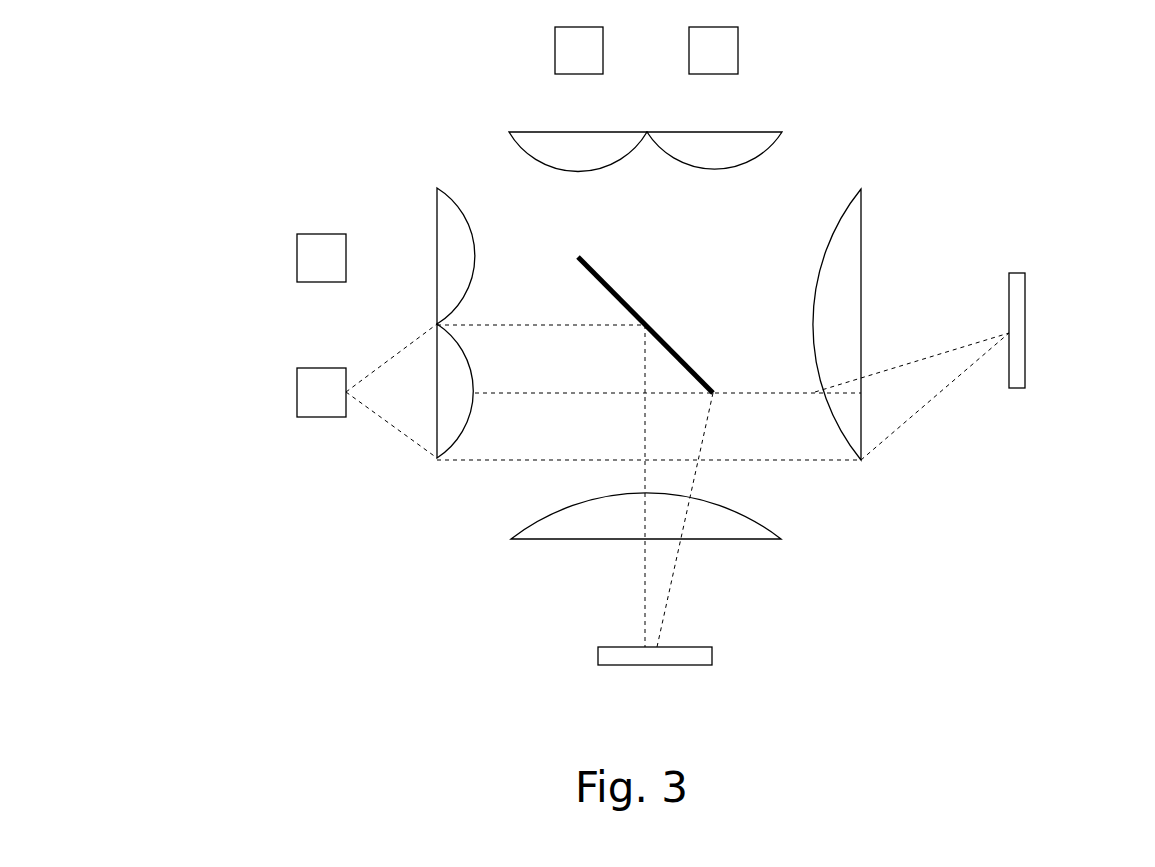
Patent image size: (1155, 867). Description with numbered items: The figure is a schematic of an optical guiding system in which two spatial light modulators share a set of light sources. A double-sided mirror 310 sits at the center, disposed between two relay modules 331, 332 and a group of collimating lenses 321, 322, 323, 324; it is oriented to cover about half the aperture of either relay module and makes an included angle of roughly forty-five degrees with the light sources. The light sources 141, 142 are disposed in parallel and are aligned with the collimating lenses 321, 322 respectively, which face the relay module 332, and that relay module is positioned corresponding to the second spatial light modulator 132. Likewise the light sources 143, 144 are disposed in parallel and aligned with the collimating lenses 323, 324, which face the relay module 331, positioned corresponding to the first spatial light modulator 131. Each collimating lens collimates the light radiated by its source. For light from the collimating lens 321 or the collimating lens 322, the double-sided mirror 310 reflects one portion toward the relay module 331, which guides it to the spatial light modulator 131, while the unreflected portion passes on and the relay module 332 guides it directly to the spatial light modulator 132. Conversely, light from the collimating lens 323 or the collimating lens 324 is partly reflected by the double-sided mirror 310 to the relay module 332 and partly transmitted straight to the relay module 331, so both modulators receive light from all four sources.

The first spatial light modulator 131 is at (677, 667).
The second spatial light modulator 132 is at (1025, 323).
The light source 141 is at (297, 390).
The light source 142 is at (297, 255).
The light source 143 is at (548, 53).
The light source 144 is at (740, 53).
The double-sided mirror 310 is at (608, 277).
The collimating lens 321 is at (437, 443).
The collimating lens 322 is at (435, 207).
The collimating lens 323 is at (540, 137).
The collimating lens 324 is at (753, 137).
The relay module 331 is at (752, 533).
The relay module 332 is at (857, 243).